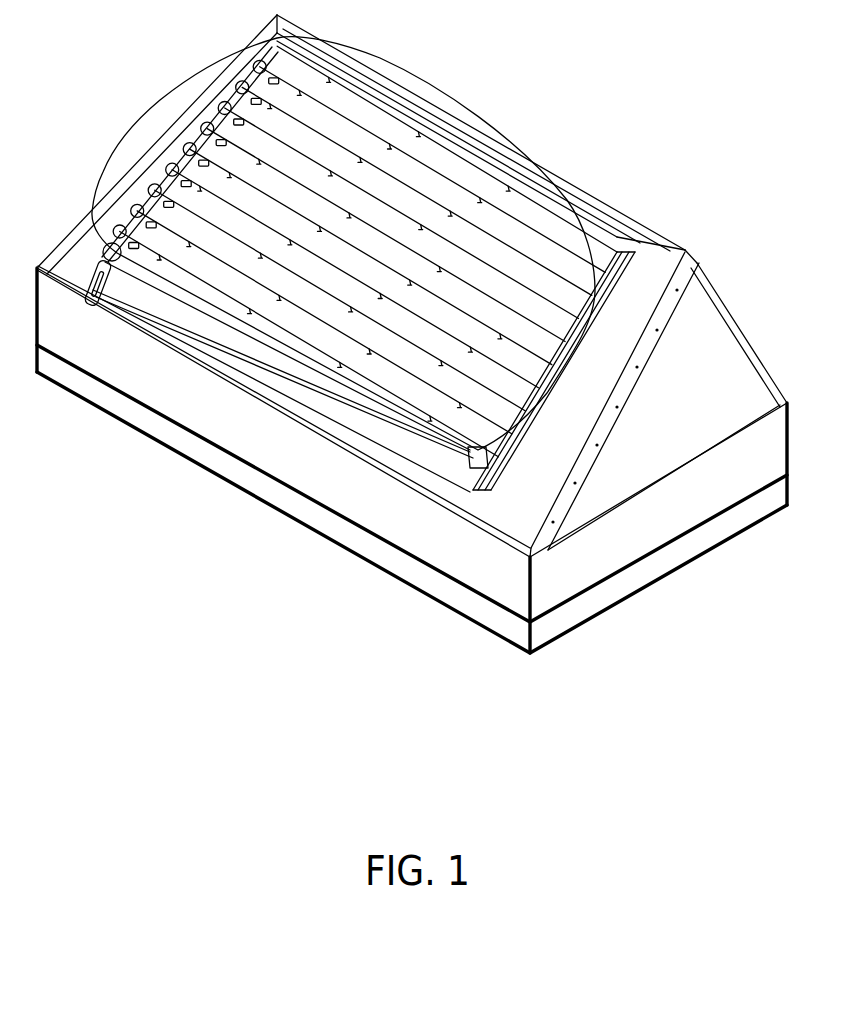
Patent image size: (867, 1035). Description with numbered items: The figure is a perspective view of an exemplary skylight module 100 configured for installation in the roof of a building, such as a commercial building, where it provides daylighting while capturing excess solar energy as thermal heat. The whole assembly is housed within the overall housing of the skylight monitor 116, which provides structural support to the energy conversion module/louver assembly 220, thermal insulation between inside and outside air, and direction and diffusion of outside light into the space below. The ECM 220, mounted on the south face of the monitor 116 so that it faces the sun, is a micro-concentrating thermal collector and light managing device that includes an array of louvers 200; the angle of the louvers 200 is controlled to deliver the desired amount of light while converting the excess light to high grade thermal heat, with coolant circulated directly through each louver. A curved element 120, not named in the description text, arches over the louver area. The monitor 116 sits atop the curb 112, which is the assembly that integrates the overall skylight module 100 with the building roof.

The skylight module 100 is at (709, 198).
The curb 112 is at (460, 552).
The monitor 116 is at (728, 330).
The transparent cover dome 120 is at (104, 168).
The louvers 200 is at (485, 238).
The energy conversion module/louver assembly 220 is at (339, 168).